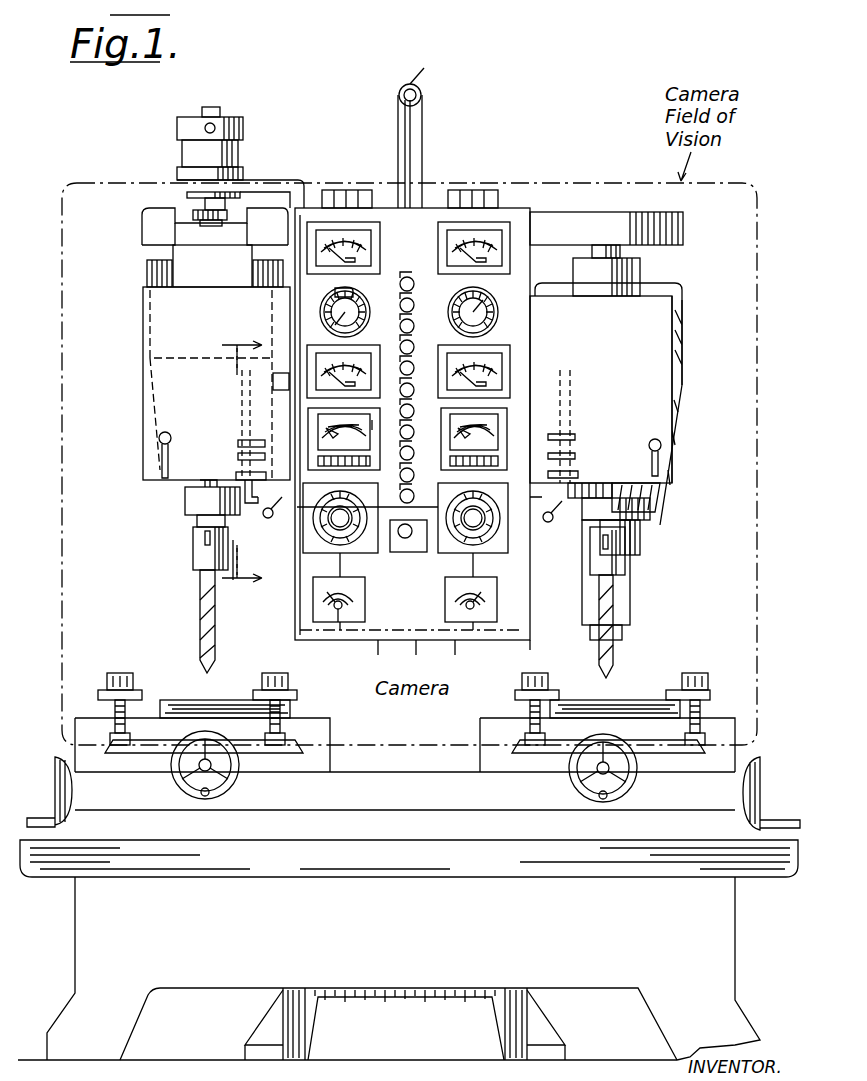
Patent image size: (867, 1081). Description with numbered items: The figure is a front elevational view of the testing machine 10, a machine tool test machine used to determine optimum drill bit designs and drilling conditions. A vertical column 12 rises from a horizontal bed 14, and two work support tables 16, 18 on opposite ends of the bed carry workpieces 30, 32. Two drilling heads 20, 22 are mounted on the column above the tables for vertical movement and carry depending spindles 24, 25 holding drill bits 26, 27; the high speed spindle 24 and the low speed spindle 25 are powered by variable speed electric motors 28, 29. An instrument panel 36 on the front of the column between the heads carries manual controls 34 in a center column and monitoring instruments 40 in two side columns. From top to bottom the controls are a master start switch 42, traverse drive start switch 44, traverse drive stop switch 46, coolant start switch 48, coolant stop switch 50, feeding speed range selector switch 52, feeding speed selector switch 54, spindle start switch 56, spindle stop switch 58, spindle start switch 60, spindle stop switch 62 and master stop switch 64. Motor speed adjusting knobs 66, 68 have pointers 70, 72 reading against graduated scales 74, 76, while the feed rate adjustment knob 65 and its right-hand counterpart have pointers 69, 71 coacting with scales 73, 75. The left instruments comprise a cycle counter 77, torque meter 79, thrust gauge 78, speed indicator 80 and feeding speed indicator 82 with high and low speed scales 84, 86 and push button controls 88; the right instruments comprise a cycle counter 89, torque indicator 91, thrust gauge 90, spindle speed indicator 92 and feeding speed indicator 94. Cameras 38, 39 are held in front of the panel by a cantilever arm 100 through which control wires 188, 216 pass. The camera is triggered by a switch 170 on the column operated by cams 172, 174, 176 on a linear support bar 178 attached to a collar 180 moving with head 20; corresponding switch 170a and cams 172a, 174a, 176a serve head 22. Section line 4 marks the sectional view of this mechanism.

The section line 4- 4 is at (233, 473).
The testing machine 10 is at (705, 325).
The vertical column 12 is at (533, 648).
The horizontal bed 14 is at (712, 937).
The work support table 16 is at (87, 733).
The work support table 18 is at (722, 733).
The drilling head 20 is at (136, 444).
The drilling head 22 is at (693, 459).
The spindle 24 is at (193, 535).
The spindle 25 is at (612, 570).
The drill bit 26 is at (200, 610).
The drill bit 27 is at (613, 658).
The variable speed electric motor 28 is at (150, 290).
The variable speed electric motor 29 is at (682, 392).
The workpiece 30 is at (176, 700).
The workpiece 32 is at (645, 700).
The manual controls 34 is at (395, 258).
The instrument panel 36 is at (440, 199).
The single frame camera 38 is at (378, 640).
The camera 39 is at (455, 640).
The monitoring instruments 40 is at (520, 215).
The master start switch 42 is at (414, 284).
The traverse drive start switch 44 is at (414, 305).
The traverse drive stop switch 46 is at (414, 326).
The coolant start switch 48 is at (414, 346).
The coolant stop switch 50 is at (414, 368).
The feeding speed range selector switch 52 is at (414, 390).
The feeding speed selector switch 54 is at (414, 411).
The spindle start switch 56 is at (414, 432).
The spindle stop switch 58 is at (414, 453).
The spindle start switch 60 is at (414, 475).
The spindle stop switch 62 is at (414, 496).
The master stop switch 64 is at (398, 540).
The feed rate adjustment knob 65 is at (338, 612).
The motor speed adjusting knob 66 is at (333, 530).
The motor speed adjustment knob 68 is at (478, 528).
The pointer 69 is at (330, 612).
The pointer 70 is at (295, 530).
The pointer 71 is at (497, 616).
The pointer 72 is at (572, 440).
The graduated scale 73 is at (333, 605).
The graduated scale 74 is at (338, 553).
The graduated scale 75 is at (497, 598).
The graduated scale 76 is at (466, 533).
The cycle counter 77 is at (345, 190).
The thrust gauge 78 is at (352, 297).
The torque meter 79 is at (325, 272).
The speed indicator 80 is at (318, 348).
The feeding speed indicator 82 is at (383, 455).
The high speed indicating scale 84 is at (325, 420).
The low speed indicating scale 86 is at (325, 440).
The push button controls 88 is at (325, 462).
The cycle counter and indicator 89 is at (505, 222).
The thrust gauge 90 is at (497, 318).
The torque indicator 91 is at (538, 245).
The spindle speed indicator 92 is at (505, 362).
The feeding speed indicator 94 is at (518, 418).
The cantilever arm 100 is at (422, 108).
The switch 170 is at (244, 551).
The switch 170a is at (556, 541).
The switch operating cam 172 is at (238, 474).
The switch operating cam 174 is at (238, 456).
The switch operating cam 176 is at (240, 440).
The linear support bar 178 is at (245, 410).
The switch operating cam 172a is at (575, 474).
The switch operating cam 174a is at (575, 456).
The switch operating cam 176a is at (575, 437).
The collar 180 is at (185, 500).
The control wire 188 is at (418, 84).
The control wire 216 is at (420, 95).